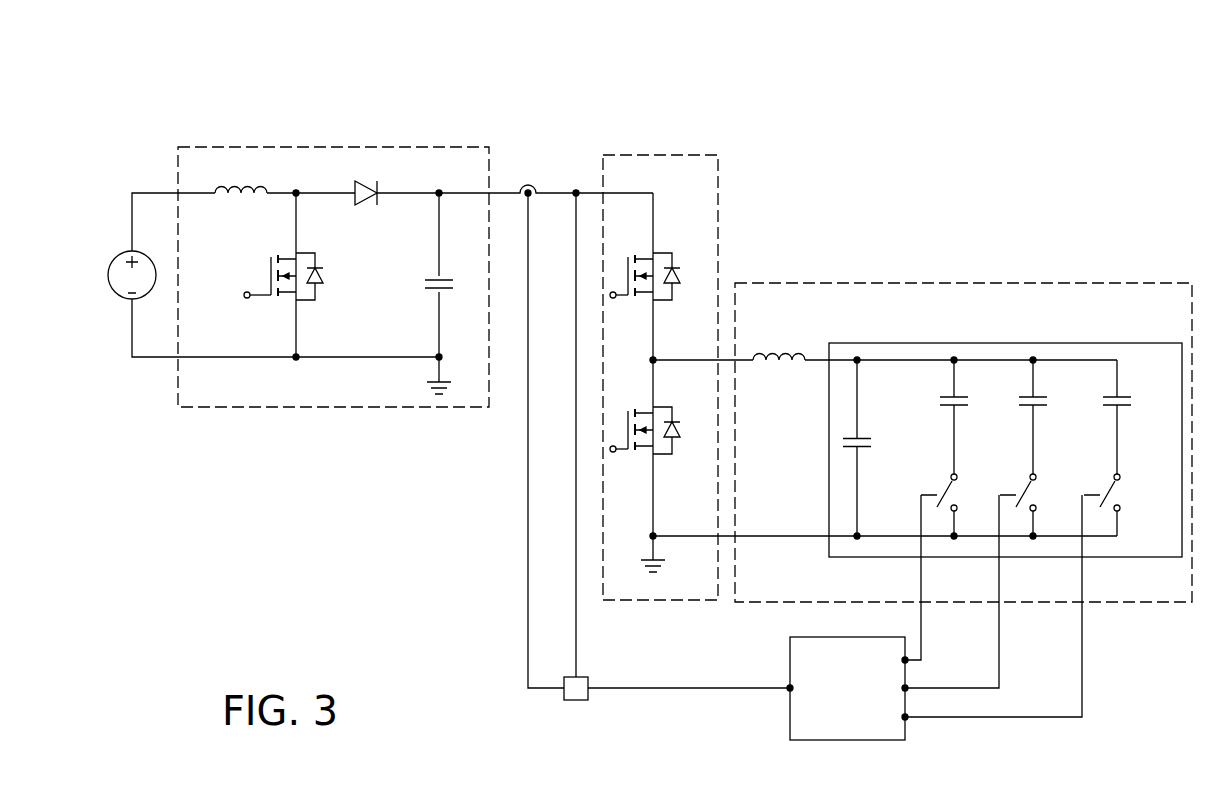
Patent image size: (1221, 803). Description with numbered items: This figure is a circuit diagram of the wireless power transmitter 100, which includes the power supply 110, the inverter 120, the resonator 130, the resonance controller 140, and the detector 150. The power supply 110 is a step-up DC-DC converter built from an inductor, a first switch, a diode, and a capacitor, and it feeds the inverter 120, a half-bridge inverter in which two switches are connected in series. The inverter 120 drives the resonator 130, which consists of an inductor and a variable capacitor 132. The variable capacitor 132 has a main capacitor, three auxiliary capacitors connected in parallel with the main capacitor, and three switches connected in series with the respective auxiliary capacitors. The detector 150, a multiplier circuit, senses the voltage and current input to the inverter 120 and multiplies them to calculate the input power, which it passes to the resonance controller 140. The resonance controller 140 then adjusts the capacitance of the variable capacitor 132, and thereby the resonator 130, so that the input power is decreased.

The wireless power transmitter 100 is at (723, 50).
The power supply 110 is at (455, 147).
The inverter 120 is at (690, 155).
The resonator 130 is at (1160, 283).
The variable capacitor 132 is at (1148, 343).
The resonance controller 140 is at (866, 701).
The detector 150 is at (588, 677).